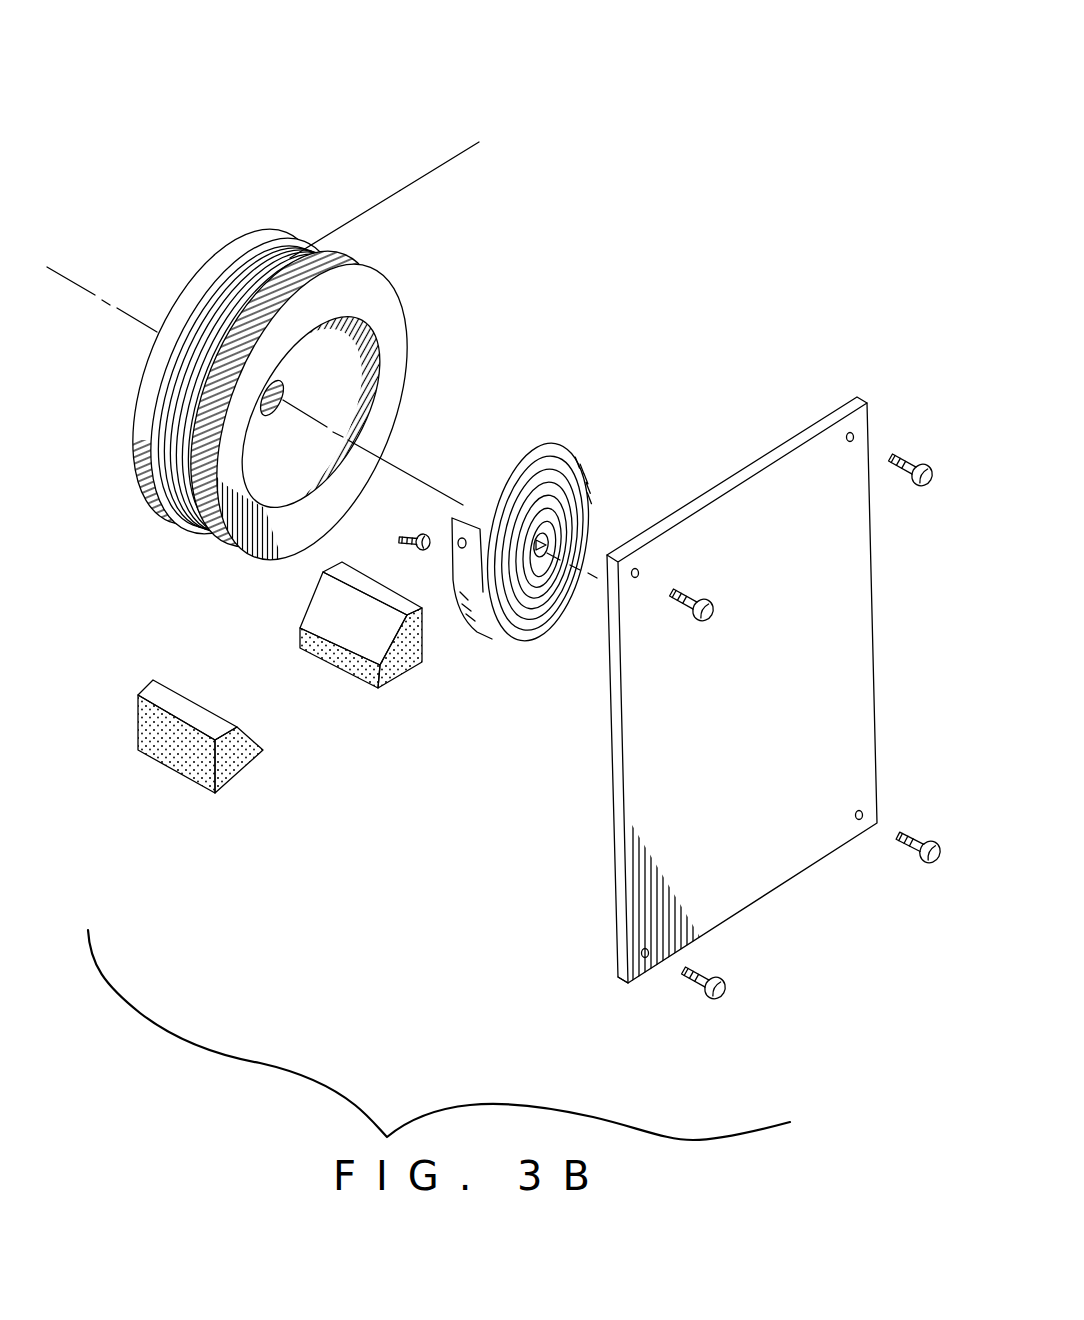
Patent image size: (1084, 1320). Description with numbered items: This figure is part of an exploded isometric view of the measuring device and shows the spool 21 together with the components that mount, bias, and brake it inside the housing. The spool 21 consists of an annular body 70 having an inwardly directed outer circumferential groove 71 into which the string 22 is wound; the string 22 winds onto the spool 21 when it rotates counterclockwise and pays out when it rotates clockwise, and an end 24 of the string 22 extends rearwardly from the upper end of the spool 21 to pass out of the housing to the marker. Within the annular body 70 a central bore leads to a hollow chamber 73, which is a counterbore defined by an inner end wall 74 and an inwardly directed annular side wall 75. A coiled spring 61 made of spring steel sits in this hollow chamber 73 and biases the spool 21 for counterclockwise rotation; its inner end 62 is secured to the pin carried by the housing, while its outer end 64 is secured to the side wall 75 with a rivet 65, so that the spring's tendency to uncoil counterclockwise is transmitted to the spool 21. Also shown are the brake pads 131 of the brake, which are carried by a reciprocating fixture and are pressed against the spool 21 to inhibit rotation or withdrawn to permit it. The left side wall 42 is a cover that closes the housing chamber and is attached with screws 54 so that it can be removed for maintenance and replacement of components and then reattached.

The spool 21 is at (311, 384).
The string 22 is at (387, 195).
The end of string 24 is at (479, 142).
The annular body 70 is at (392, 283).
The outer circumferential recess/groove 71 is at (248, 262).
The hollow chamber 73 is at (297, 442).
The inner end wall 74 is at (310, 388).
The annular side wall 75 is at (220, 543).
The coiled spring 61 is at (583, 550).
The inner end of spring 62 is at (540, 641).
The outer end of spring 64 is at (468, 527).
The rivet 65 is at (410, 548).
The brake pads 131 is at (373, 647).
The side wall 42 is at (853, 624).
The screws 54 is at (690, 595).